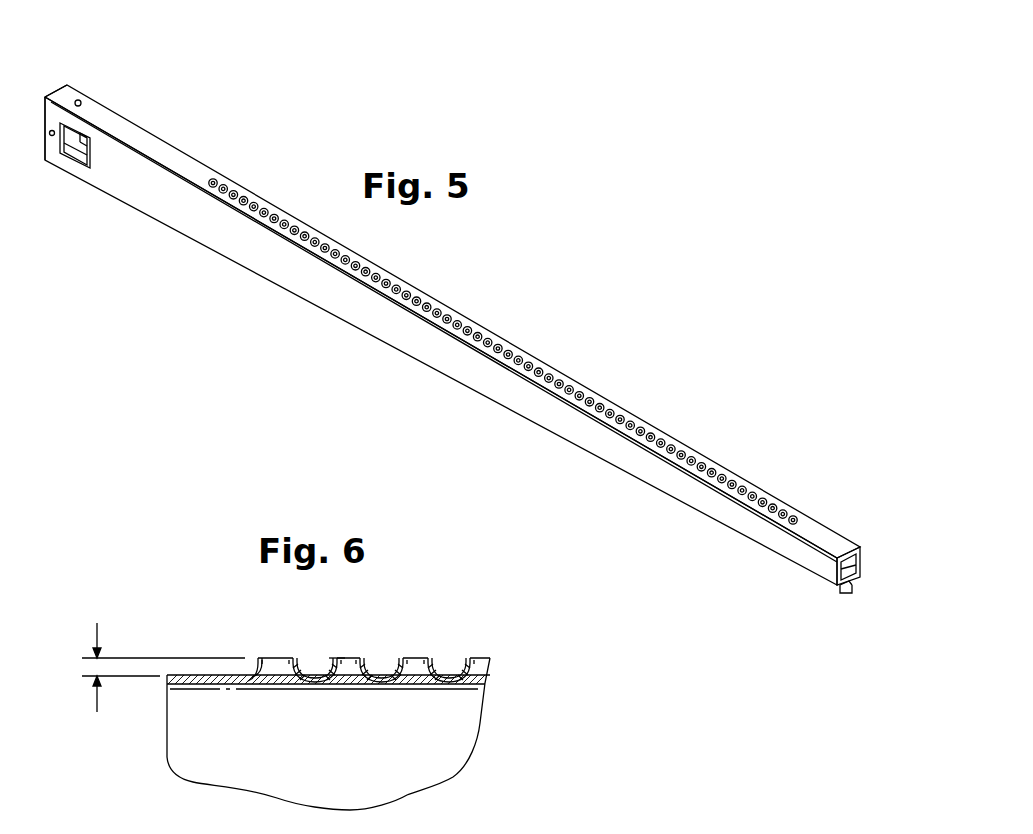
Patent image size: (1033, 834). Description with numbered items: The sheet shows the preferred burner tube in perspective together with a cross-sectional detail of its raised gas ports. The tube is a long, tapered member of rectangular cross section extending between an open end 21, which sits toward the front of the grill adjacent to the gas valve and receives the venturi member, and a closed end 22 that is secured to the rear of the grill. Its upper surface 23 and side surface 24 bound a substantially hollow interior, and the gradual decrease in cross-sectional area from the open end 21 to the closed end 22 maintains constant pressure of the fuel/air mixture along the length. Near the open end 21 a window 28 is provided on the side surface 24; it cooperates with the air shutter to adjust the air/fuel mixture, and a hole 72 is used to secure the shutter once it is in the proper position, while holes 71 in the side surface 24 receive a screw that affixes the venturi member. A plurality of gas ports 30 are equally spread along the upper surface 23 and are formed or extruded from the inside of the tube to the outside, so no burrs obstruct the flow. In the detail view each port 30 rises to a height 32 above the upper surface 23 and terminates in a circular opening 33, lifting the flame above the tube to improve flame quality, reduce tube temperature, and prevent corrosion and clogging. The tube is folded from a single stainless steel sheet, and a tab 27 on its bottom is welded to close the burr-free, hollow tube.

In FIG. 5, the open end 21 is at (50, 95).
In FIG. 5, the closed end 22 is at (861, 554).
In FIG. 5, the upper surface 23 is at (165, 148).
In FIG. 6, the upper surface 23 is at (213, 672).
In FIG. 5, the side surface 24 is at (145, 197).
In FIG. 6, the side surface 24 is at (455, 732).
In FIG. 5, the tab 27 is at (841, 593).
In FIG. 5, the window 28 is at (92, 150).
In FIG. 5, the gas ports 30 is at (572, 382).
In FIG. 6, the gas ports 30 is at (370, 660).
In FIG. 6, the height 32 is at (80, 666).
In FIG. 6, the opening 33 is at (331, 658).
In FIG. 5, the holes 71 is at (50, 133).
In FIG. 5, the hole 72 is at (81, 101).